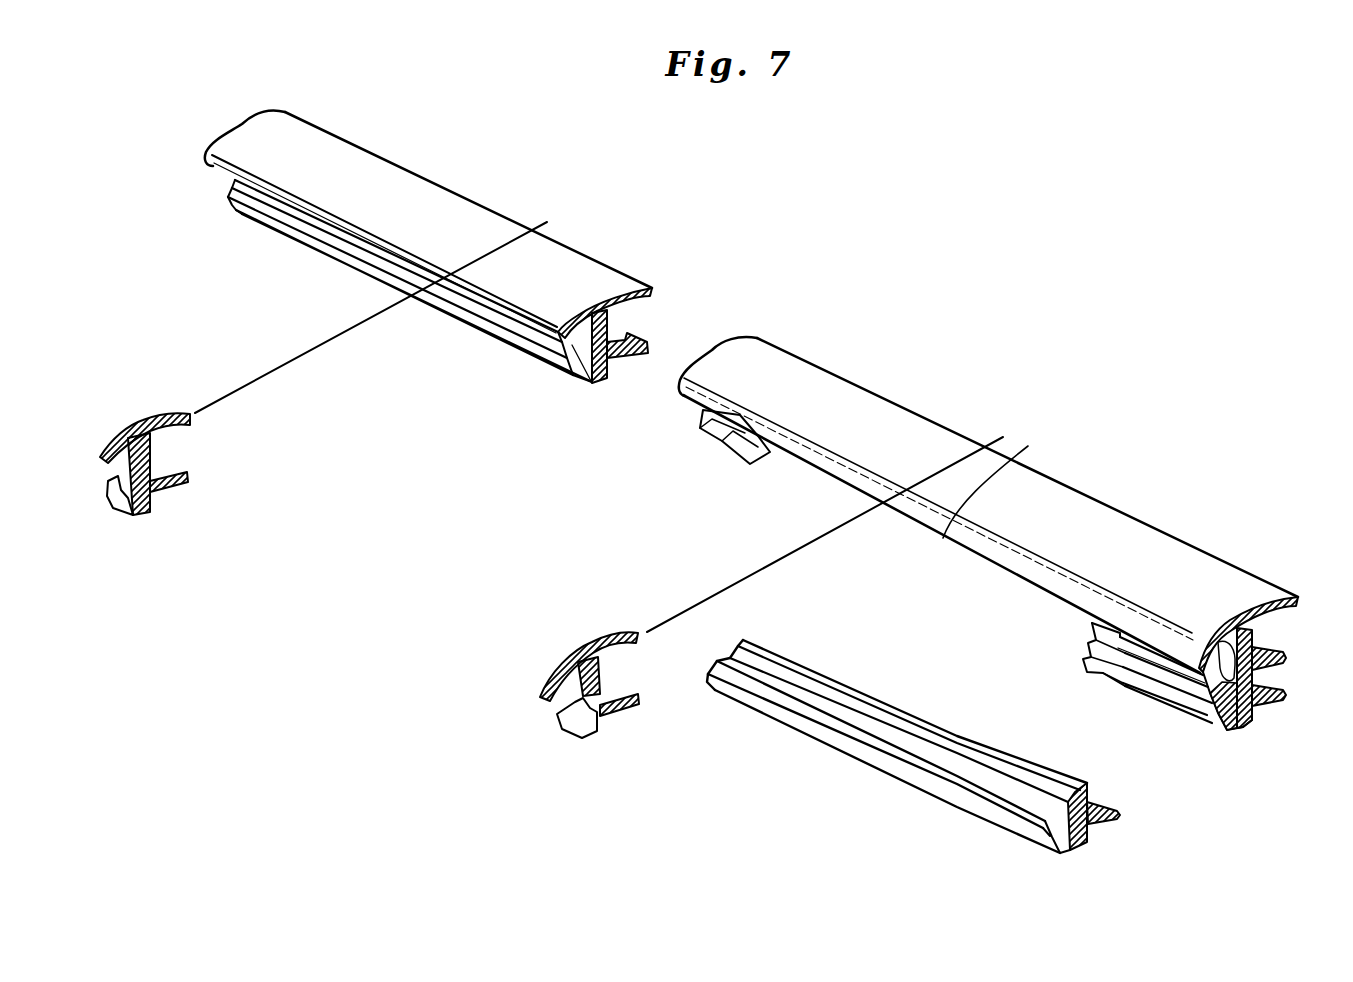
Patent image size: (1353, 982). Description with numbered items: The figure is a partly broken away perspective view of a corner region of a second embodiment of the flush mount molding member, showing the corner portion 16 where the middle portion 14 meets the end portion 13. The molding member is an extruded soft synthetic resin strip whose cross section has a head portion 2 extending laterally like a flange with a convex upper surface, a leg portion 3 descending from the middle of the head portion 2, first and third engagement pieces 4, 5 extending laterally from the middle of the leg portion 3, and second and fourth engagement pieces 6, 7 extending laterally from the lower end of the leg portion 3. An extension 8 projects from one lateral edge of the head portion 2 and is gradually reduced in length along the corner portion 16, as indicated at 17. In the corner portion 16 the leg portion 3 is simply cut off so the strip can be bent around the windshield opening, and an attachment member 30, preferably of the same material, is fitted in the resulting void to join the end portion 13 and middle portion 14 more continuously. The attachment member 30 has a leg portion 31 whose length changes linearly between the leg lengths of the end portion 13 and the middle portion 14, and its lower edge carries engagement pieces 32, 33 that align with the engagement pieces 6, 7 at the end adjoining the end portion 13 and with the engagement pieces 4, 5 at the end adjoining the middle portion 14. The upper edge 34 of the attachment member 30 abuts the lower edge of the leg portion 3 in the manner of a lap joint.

The head portion 2 is at (458, 212).
The leg portion 3 is at (608, 323).
The first engagement piece 4 is at (473, 320).
The third engagement piece 5 is at (633, 338).
The second engagement piece 6 is at (1180, 698).
The fourth engagement piece 7 is at (1275, 700).
The extension 8 is at (1122, 625).
The end portion 13 is at (1276, 586).
The middle portion 14 is at (329, 133).
The corner portion 16 is at (1121, 513).
The gradual reduction of extension 17 is at (997, 477).
The attachment member 30 is at (938, 756).
The leg portion of attachment member 31 is at (1093, 805).
The engagement piece 32 is at (1008, 815).
The engagement piece 33 is at (1117, 818).
The upper edge 34 is at (897, 708).